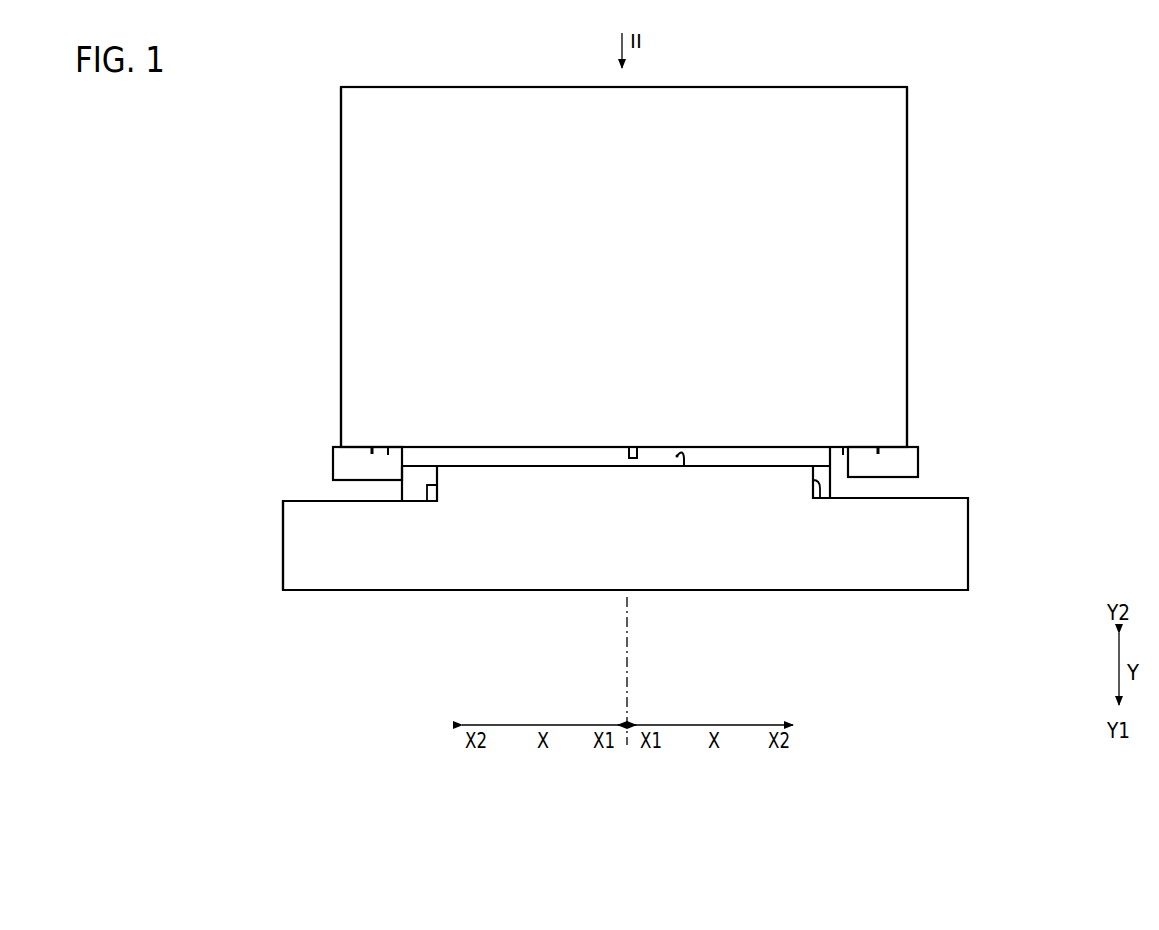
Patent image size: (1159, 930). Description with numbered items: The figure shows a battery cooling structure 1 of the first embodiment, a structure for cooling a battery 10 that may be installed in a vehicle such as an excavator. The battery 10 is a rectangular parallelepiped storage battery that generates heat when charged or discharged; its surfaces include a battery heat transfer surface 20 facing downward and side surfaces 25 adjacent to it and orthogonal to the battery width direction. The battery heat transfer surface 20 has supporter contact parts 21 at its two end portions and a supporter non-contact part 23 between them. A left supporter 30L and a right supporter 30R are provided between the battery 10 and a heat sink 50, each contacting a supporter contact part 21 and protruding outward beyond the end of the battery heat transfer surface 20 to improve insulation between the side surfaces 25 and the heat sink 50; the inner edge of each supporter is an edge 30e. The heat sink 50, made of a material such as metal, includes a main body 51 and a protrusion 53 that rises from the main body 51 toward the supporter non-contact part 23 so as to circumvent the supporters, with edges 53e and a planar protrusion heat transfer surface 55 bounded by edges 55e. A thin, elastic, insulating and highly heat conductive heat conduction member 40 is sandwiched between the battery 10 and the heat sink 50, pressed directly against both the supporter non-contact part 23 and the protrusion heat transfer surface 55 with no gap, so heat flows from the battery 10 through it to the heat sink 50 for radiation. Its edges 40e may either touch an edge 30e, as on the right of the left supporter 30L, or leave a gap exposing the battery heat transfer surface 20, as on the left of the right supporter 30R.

The battery cooling structure 1 is at (288, 96).
The battery 10 is at (358, 192).
The side surfaces 25 is at (339, 264).
The battery heat transfer surface 20 is at (626, 403).
The supporter contact parts 21 is at (370, 455).
The supporter non-contact part 23 is at (630, 444).
The left supporter 30L is at (336, 468).
The right supporter 30R is at (915, 462).
The supporter edge 30e is at (402, 452).
The heat conduction member 40 is at (515, 450).
The heat conduction member edges 40e is at (393, 456).
The heat sink 50 is at (300, 575).
The main body 51 is at (276, 538).
The protrusion 53 is at (574, 480).
The protrusion edges 53e is at (427, 490).
The protrusion heat transfer surface 55 is at (685, 468).
The protrusion heat transfer surface edges 55e is at (430, 462).